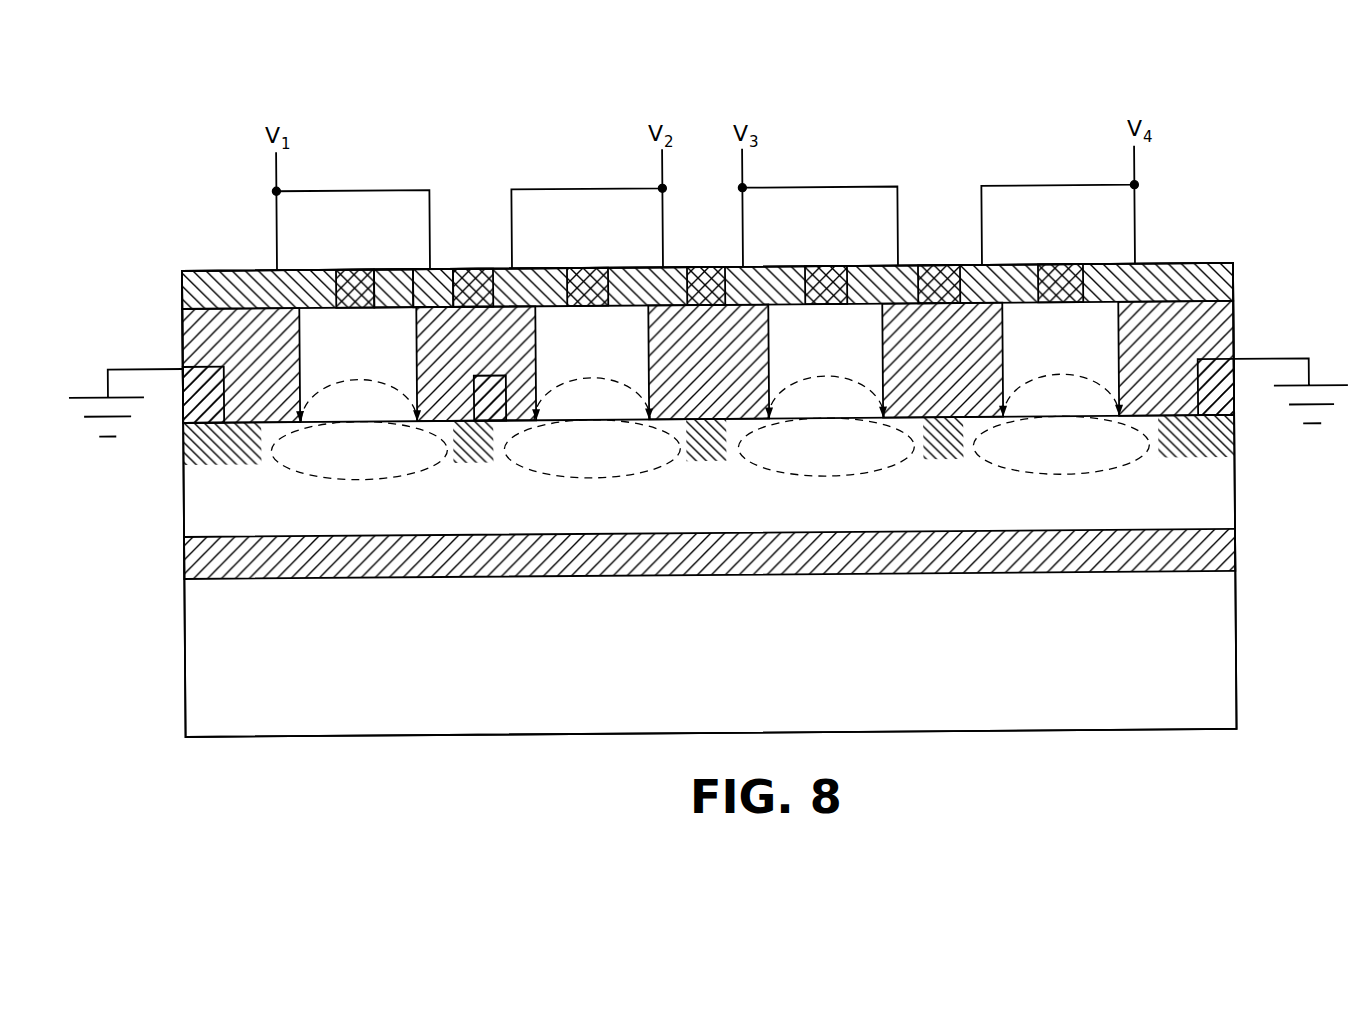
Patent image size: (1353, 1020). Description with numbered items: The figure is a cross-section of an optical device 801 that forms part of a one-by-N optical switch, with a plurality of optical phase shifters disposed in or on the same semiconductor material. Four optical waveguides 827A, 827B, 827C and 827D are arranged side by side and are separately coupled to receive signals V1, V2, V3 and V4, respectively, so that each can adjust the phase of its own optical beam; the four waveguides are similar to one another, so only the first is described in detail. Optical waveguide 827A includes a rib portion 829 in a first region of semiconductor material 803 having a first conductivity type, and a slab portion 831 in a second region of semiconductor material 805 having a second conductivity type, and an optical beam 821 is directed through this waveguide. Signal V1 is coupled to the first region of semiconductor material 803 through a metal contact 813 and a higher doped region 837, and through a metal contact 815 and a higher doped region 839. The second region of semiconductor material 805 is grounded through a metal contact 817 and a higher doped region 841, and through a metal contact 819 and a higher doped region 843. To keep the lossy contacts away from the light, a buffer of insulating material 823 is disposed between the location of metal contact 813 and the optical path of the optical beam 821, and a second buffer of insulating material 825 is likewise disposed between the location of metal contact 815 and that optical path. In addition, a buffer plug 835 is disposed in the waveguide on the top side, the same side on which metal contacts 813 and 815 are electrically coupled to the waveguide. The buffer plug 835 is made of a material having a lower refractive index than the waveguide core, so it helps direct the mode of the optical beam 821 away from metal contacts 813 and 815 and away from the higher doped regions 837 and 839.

The optical device 801 is at (1188, 99).
The first region of semiconductor material 803 is at (393, 271).
The second region of semiconductor material 805 is at (195, 507).
The metal contact 813 is at (270, 271).
The metal contact 815 is at (437, 240).
The metal contact 817 is at (140, 363).
The metal contact 819 is at (470, 405).
The optical beam 821 is at (408, 482).
The buffer of insulating material 823 is at (183, 332).
The buffer of insulating material 825 is at (524, 357).
The optical waveguide 827A is at (322, 323).
The optical waveguide 827B is at (559, 321).
The optical waveguide 827C is at (793, 321).
The optical waveguide 827D is at (1028, 319).
The rib portion 829 is at (369, 356).
The slab portion 831 is at (333, 523).
The buffer plug 835 is at (366, 271).
The higher doped region 837 is at (225, 271).
The higher doped region 839 is at (442, 271).
The higher doped region 841 is at (183, 453).
The higher doped region 843 is at (472, 464).